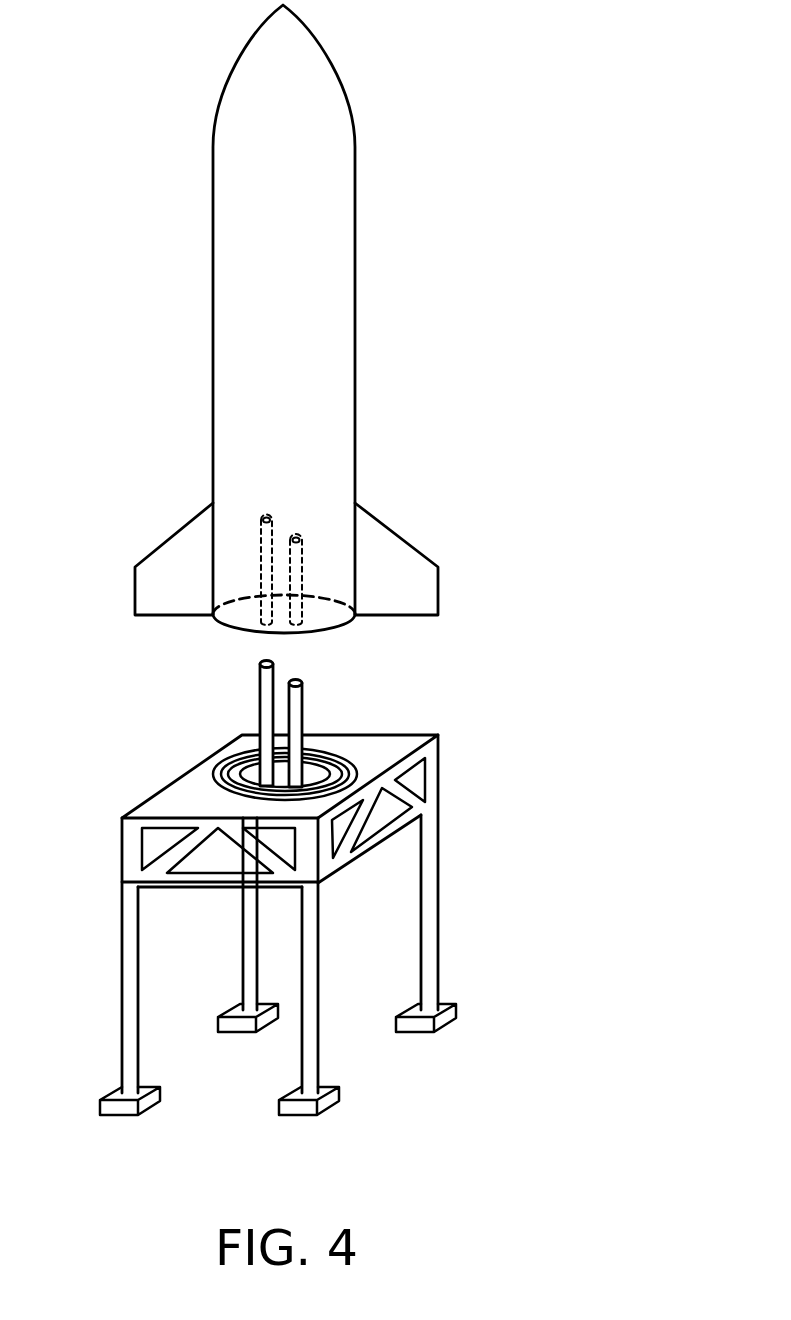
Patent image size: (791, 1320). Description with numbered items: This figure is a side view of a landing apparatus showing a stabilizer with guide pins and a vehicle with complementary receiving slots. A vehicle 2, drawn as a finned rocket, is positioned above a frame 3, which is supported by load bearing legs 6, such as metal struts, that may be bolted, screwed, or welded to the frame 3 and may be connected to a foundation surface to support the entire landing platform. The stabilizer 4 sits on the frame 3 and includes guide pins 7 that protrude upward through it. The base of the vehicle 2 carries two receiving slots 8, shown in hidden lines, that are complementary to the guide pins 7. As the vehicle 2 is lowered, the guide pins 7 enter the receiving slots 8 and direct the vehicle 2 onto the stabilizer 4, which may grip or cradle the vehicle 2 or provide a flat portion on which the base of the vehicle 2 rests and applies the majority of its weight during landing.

The vehicle 2 is at (298, 297).
The frame 3 is at (162, 807).
The stabilizer 4 is at (213, 765).
The load bearing legs 6 is at (132, 925).
The guide pins 7 is at (265, 700).
The receiving slots 8 is at (263, 570).